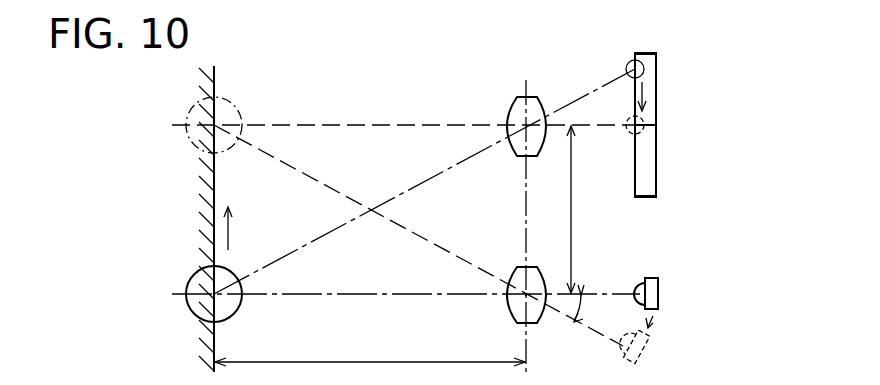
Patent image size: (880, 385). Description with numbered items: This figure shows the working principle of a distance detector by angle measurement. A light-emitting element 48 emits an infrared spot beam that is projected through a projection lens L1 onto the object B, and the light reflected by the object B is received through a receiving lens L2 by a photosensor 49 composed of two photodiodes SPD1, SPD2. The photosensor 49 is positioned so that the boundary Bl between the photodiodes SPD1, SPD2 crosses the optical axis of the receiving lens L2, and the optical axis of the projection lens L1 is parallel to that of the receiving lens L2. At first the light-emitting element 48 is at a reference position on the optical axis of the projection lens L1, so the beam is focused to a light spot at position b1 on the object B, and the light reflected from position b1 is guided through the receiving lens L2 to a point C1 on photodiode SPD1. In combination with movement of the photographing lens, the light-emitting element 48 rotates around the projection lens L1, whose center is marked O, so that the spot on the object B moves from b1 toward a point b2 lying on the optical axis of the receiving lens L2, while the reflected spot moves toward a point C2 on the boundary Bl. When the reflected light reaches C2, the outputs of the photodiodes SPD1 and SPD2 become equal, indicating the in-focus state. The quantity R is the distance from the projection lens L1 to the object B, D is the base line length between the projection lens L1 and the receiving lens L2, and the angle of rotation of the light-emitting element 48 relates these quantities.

The object B is at (216, 78).
The position b1 on the object b1 is at (196, 310).
The point b2 on the object b2 is at (207, 110).
The projection lens L1 is at (545, 315).
The receiving lens L2 is at (512, 100).
The optical center of lens L1 O is at (524, 290).
The photosensor 49 is at (655, 51).
The photodiode SPD1 is at (657, 72).
The photodiode SPD2 is at (657, 160).
The boundary of the photodiodes Bl is at (650, 124).
The point C1 on photodiode SPD1 C1 is at (626, 68).
The point C2 on the boundary C2 is at (628, 130).
The base line length D is at (569, 212).
The distance from the projection lens to the object R is at (370, 351).
The light-emitting element 48 is at (657, 276).